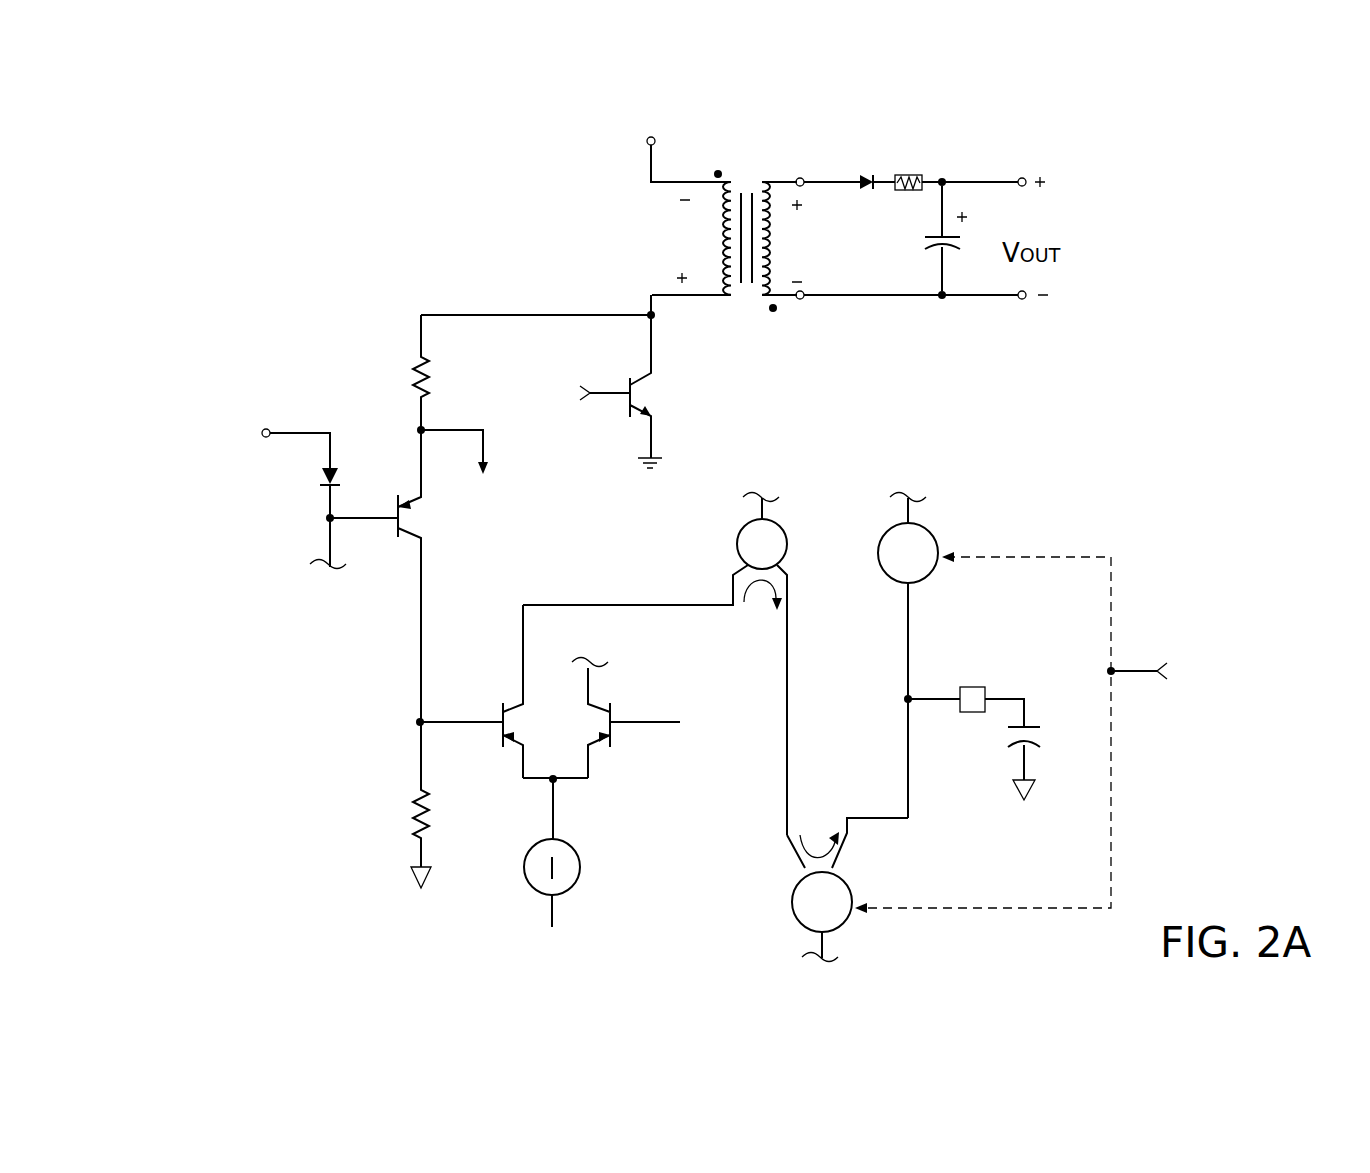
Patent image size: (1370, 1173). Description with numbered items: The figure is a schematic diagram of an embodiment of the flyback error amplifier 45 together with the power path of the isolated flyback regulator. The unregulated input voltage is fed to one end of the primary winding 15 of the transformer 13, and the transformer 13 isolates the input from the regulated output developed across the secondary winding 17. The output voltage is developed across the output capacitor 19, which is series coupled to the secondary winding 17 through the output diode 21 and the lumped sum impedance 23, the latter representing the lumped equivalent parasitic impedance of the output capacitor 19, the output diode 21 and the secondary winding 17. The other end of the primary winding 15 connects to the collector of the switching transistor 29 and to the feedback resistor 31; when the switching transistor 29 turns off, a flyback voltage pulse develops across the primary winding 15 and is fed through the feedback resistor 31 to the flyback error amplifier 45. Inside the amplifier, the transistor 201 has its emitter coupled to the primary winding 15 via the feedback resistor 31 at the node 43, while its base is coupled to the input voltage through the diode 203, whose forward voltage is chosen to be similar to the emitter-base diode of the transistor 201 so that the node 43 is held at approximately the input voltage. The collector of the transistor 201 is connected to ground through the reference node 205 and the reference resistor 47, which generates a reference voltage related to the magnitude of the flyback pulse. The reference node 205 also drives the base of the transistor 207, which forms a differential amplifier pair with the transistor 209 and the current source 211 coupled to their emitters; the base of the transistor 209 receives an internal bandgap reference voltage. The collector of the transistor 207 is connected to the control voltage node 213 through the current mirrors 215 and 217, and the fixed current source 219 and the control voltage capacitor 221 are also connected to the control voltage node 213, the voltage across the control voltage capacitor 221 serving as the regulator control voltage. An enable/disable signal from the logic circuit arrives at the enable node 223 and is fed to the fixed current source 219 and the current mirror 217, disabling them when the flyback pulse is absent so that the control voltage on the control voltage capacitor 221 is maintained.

The transformer 13 is at (782, 157).
The primary winding 15 is at (726, 293).
The secondary winding 17 is at (778, 292).
The output capacitor 19 is at (947, 250).
The output diode 21 is at (868, 197).
The lumped sum impedance 23 is at (912, 175).
The switching transistor 29 is at (643, 383).
The feedback resistor 31 is at (412, 373).
The node 43 is at (418, 430).
The flyback error amplifier 45 is at (198, 497).
The reference resistor 47 is at (412, 832).
The transistor 201 is at (422, 532).
The diode 203 is at (322, 474).
The reference node 205 is at (416, 722).
The transistor 207 is at (517, 706).
The transistor 209 is at (597, 706).
The current source 211 is at (582, 863).
The control voltage node 213 is at (905, 699).
The current mirror 215 is at (785, 530).
The current mirror 217 is at (795, 920).
The fixed current source 219 is at (936, 530).
The control voltage capacitor 221 is at (1032, 731).
The enable node 223 is at (1113, 669).